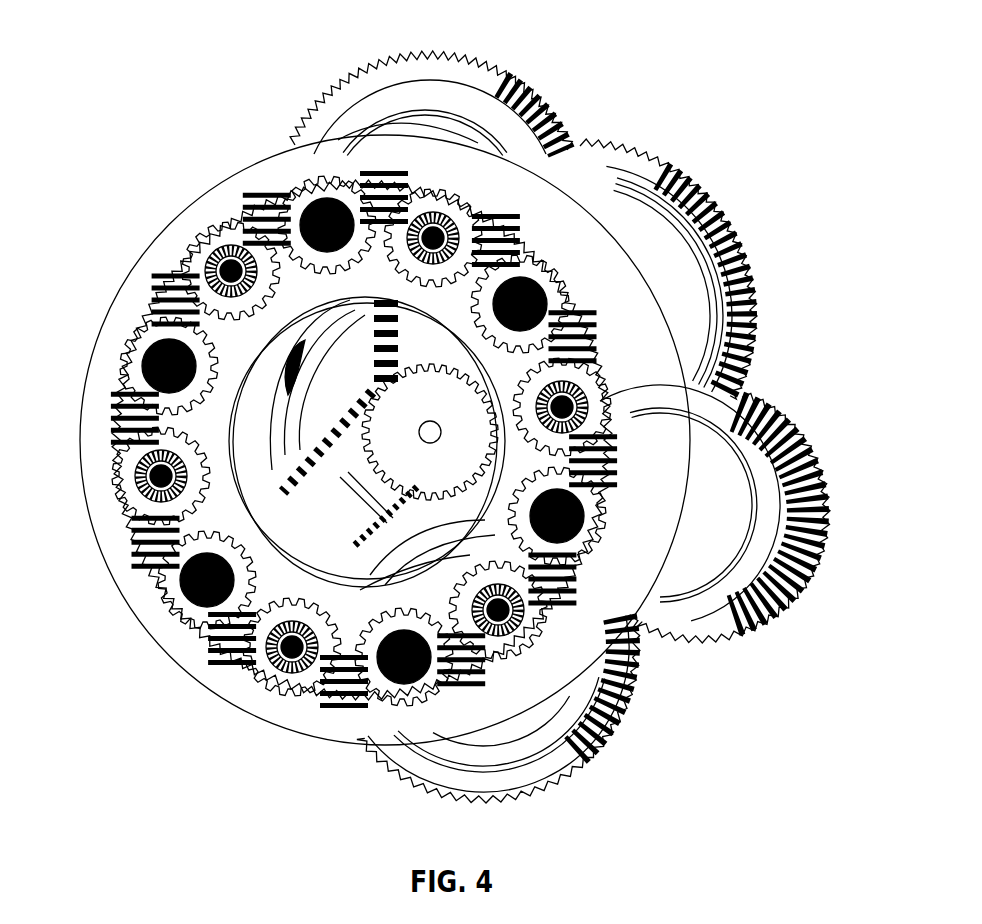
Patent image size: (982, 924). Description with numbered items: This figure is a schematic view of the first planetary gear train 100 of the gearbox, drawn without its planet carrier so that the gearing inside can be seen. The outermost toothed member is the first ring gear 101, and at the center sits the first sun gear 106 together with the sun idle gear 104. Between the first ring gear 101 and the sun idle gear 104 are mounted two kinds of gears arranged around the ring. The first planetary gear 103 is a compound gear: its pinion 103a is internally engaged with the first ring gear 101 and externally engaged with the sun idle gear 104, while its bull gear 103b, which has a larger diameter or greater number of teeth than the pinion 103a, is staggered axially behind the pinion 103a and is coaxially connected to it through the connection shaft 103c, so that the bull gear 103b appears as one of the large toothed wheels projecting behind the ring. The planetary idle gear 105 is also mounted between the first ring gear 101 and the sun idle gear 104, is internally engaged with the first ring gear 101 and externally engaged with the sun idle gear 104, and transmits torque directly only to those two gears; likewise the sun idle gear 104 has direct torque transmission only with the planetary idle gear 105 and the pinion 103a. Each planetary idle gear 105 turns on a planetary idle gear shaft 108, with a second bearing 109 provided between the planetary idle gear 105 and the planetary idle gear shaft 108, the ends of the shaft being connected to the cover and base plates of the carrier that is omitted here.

The first planetary gear train 100 is at (95, 44).
The first ring gear 101 is at (227, 190).
The first planetary gear 103 is at (793, 100).
The pinion 103a is at (575, 307).
The bull gear 103b is at (635, 150).
The connection shaft 103c is at (535, 275).
The sun idle gear 104 is at (297, 560).
The planetary idle gear 105 is at (167, 267).
The first sun gear 106 is at (527, 458).
The planetary idle gear shaft 108 is at (205, 292).
The second bearing 109 is at (177, 257).